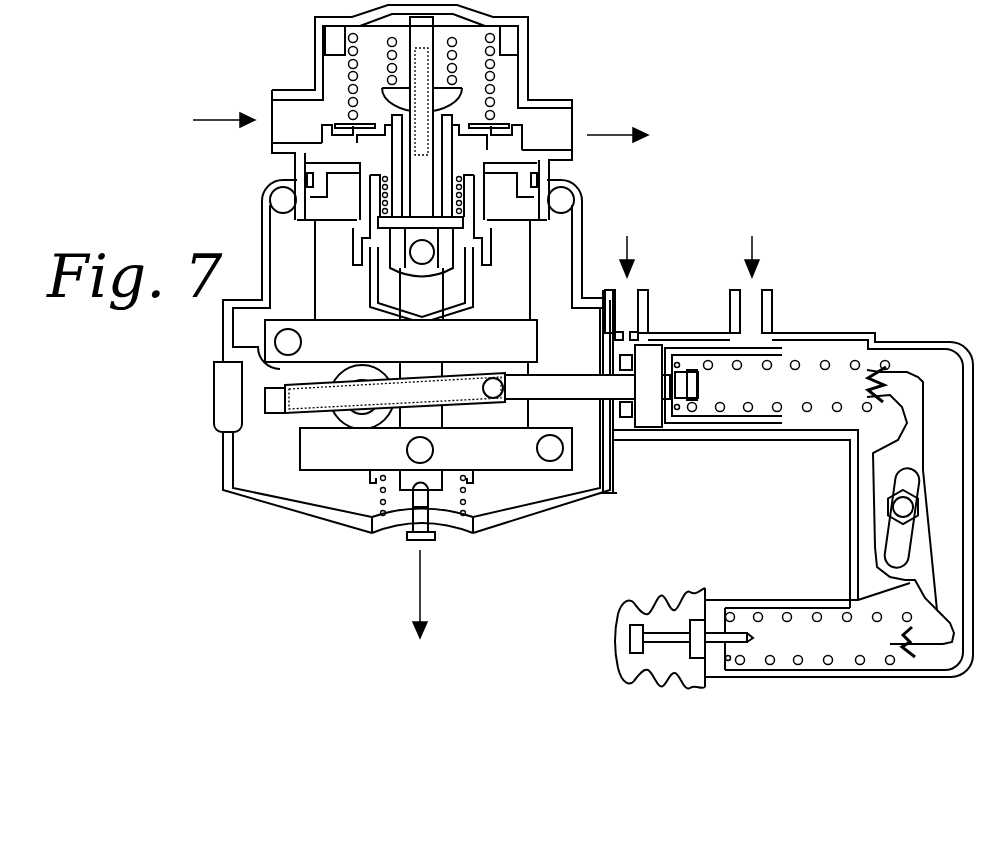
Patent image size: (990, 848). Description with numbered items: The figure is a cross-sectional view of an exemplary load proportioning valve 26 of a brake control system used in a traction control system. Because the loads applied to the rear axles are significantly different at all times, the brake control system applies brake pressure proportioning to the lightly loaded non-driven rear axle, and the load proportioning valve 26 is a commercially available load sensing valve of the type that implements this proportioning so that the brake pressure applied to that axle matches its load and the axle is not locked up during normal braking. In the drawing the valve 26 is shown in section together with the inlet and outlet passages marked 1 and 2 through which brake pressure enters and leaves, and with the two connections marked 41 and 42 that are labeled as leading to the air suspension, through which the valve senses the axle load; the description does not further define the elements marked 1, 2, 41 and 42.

The pressure control valve 1 is at (270, 587).
The outlet port 2 is at (583, 119).
The load proportioning valve 26 is at (860, 203).
The air suspension port 41 is at (626, 315).
The air suspension port 42 is at (751, 311).